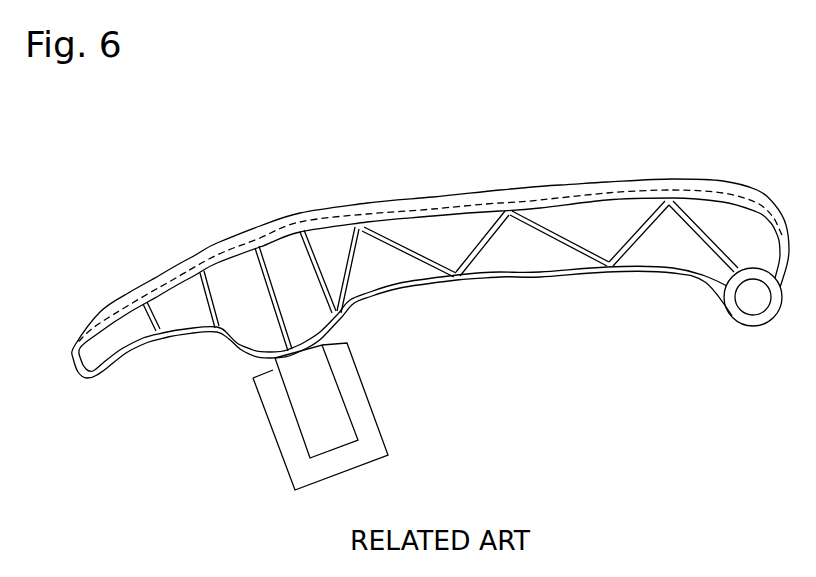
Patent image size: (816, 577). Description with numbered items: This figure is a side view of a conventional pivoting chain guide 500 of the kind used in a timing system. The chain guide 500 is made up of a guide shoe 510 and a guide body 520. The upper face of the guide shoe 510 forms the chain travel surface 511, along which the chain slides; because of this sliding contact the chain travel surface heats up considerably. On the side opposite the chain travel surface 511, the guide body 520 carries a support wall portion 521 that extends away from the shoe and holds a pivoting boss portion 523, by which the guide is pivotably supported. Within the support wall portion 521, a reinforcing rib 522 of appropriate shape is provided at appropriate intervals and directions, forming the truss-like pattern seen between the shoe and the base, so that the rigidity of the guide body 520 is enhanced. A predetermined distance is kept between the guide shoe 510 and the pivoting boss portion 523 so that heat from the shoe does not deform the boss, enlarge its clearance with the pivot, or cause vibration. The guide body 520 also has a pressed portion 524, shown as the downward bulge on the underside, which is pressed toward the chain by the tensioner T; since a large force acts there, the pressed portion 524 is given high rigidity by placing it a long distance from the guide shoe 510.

The chain guide 500 is at (180, 187).
The guide shoe 510 is at (455, 202).
The chain travel surface 511 is at (667, 193).
The guide body 520 is at (493, 280).
The support wall portion 521 is at (382, 263).
The reinforcing rib 522 is at (555, 242).
The pivoting boss portion 523 is at (743, 318).
The pressed portion 524 is at (273, 353).
The tensioner T is at (370, 398).